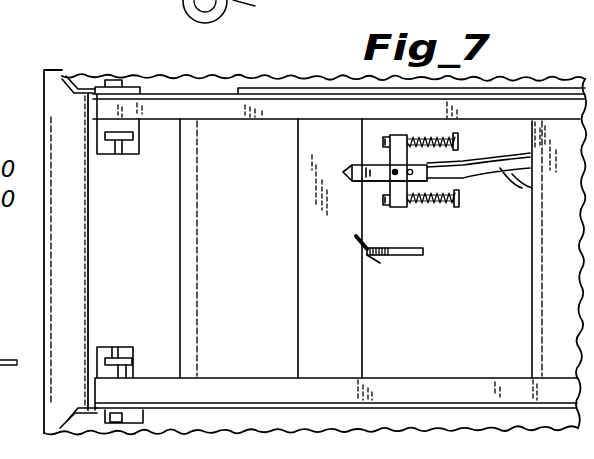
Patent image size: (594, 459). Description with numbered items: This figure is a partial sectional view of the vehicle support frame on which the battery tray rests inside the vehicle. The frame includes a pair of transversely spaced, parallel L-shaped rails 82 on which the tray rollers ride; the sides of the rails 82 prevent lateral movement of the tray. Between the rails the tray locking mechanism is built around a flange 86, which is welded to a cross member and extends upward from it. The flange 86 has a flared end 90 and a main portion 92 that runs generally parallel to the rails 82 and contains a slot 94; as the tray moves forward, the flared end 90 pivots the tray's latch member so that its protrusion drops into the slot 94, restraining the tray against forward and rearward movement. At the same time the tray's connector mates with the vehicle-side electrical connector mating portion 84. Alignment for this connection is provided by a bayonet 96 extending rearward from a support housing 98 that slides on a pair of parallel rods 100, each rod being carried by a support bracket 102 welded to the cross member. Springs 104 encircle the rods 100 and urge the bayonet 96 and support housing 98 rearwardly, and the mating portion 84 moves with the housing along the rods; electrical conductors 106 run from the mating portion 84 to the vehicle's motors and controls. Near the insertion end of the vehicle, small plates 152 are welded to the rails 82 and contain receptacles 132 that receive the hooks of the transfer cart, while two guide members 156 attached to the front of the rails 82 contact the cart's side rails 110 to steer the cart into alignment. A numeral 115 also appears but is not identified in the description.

The rails 82 is at (330, 106).
The electrical connector mating portion 84 is at (377, 163).
The flange 86 is at (421, 257).
The flared end 90 is at (354, 248).
The main portion 92 is at (367, 255).
The slot 94 is at (391, 257).
The bayonet 96 is at (343, 172).
The support housing 98 is at (368, 183).
The rods 100 is at (460, 152).
The support bracket 102 is at (456, 138).
The springs 104 is at (433, 138).
The electrical conductors 106 is at (531, 189).
The side rails 110 is at (182, 12).
The roller bracket 115 is at (263, 6).
The receptacles 132 is at (110, 155).
The plates 152 is at (143, 150).
The guide members 156 is at (66, 79).